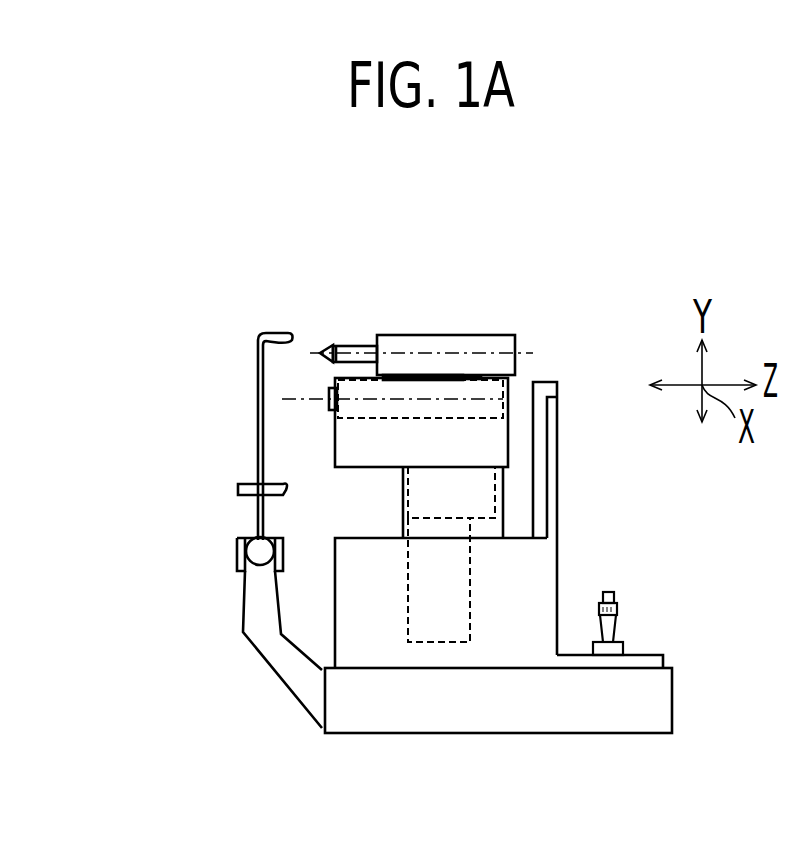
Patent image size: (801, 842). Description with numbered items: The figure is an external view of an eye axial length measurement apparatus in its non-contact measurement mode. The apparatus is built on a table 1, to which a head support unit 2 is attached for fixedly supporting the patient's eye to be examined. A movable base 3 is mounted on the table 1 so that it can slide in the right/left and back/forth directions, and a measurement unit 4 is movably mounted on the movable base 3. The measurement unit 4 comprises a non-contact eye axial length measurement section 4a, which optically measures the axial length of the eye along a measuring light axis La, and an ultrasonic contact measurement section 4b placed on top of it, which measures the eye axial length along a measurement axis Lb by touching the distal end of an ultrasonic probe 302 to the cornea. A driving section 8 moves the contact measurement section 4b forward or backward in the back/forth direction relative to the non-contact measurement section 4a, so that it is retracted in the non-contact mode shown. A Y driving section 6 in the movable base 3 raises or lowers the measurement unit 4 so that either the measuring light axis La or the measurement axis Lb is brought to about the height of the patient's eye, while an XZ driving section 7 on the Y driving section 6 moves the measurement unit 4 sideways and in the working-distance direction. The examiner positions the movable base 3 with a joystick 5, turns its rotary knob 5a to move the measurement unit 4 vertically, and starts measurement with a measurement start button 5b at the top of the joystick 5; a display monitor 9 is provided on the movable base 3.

The table 1 is at (628, 702).
The head support unit 2 is at (456, 530).
The movable base 3 is at (375, 633).
The measurement unit 4 is at (448, 321).
The non-contact eye axial length measurement section 4a is at (502, 415).
The ultrasonic eye axial length measurement section 4b is at (503, 333).
The ultrasonic probe 302 is at (352, 345).
The driving section 8 is at (412, 375).
The measurement axis Lb is at (470, 353).
The measuring light axis La is at (455, 399).
The display monitor 9 is at (553, 467).
The XZ driving section 7 is at (435, 503).
The Y driving section 6 is at (425, 592).
The joystick 5 is at (684, 567).
The rotary knob 5a is at (615, 610).
The measurement start button 5b is at (705, 588).